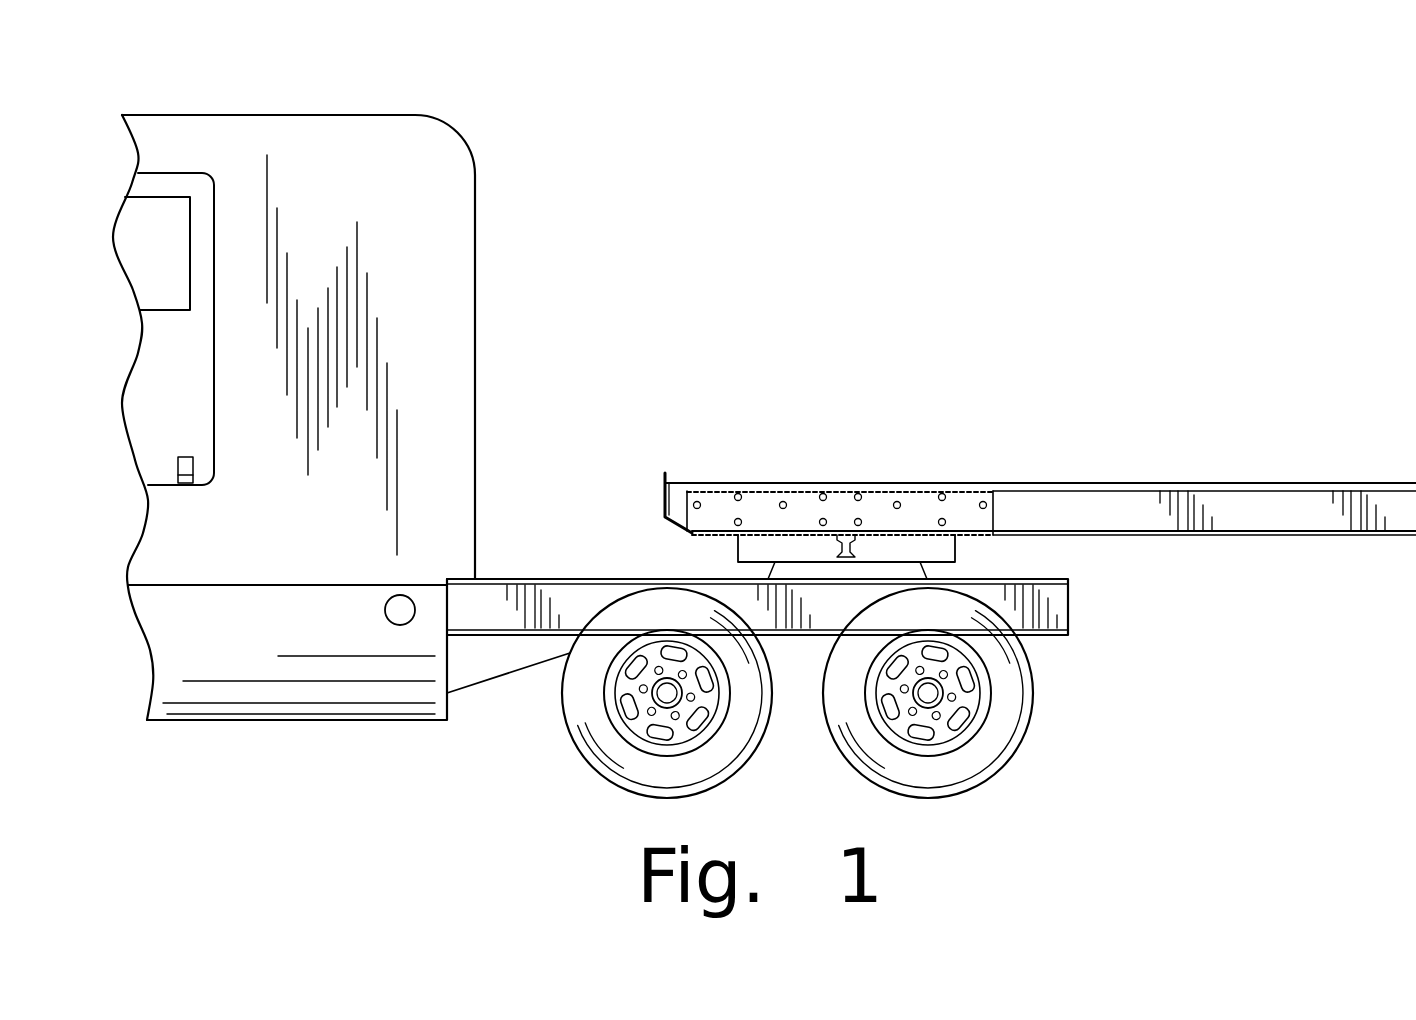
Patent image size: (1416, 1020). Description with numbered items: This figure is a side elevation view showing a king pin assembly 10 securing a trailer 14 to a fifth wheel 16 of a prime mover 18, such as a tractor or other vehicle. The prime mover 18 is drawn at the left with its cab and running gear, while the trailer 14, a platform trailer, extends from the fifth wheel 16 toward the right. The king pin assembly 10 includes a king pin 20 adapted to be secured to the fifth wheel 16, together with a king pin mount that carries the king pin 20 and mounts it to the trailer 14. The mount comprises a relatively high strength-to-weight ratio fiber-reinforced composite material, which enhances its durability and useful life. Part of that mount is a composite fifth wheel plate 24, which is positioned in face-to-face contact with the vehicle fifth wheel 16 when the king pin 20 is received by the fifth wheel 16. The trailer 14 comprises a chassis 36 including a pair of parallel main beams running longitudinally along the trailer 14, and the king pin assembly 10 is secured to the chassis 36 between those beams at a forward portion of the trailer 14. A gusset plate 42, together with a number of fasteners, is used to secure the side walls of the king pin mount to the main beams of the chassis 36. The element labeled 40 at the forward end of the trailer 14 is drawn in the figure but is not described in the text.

The king pin assembly 10 is at (647, 232).
The trailer 14 is at (1112, 500).
The fifth wheel 16 is at (701, 553).
The prime mover 18 is at (498, 80).
The king pin 20 is at (845, 534).
The composite fifth wheel plate 24 is at (999, 538).
The chassis 36 is at (1267, 542).
The stop bar 40 is at (664, 491).
The gusset plate 42 is at (720, 500).